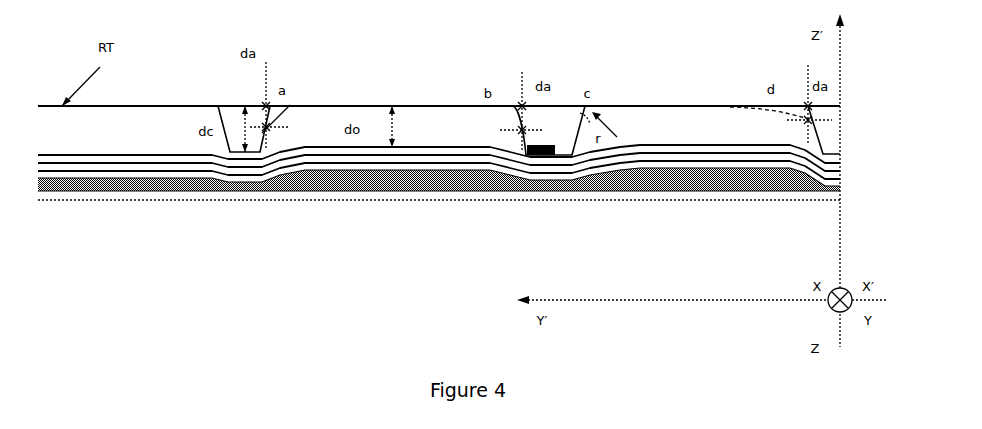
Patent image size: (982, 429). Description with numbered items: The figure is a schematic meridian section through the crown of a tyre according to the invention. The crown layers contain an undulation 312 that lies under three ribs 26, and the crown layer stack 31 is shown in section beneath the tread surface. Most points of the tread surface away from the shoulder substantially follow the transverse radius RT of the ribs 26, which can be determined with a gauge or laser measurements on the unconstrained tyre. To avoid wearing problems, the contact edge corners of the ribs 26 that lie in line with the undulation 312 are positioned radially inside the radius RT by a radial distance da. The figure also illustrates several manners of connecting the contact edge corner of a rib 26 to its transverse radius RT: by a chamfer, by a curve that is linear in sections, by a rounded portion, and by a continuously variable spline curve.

The ribs 26 is at (633, 125).
The layer stack 31 is at (439, 133).
The undulation 312 is at (697, 154).